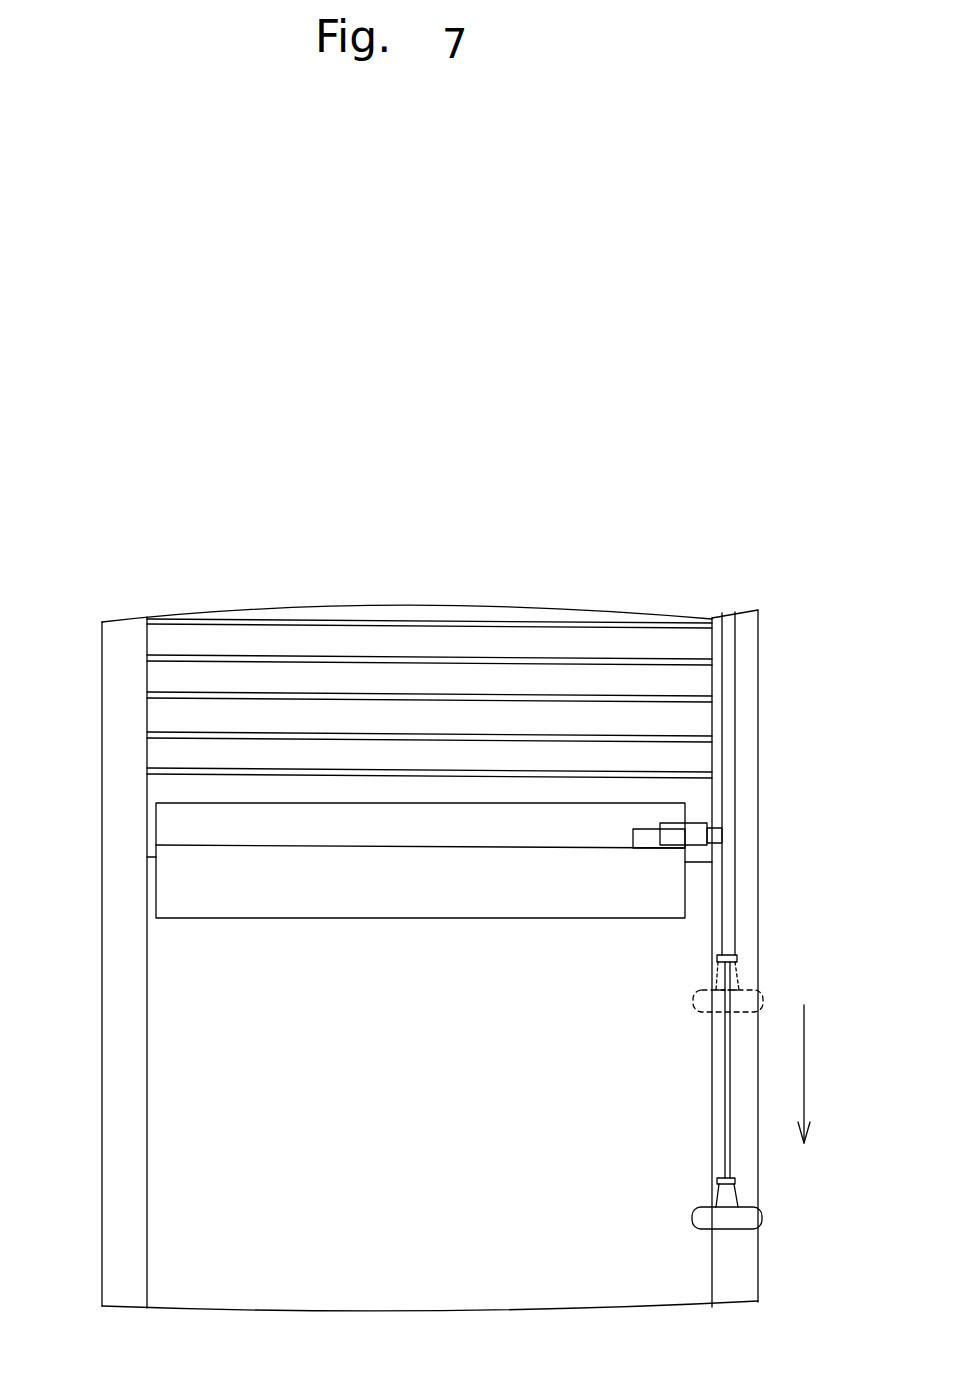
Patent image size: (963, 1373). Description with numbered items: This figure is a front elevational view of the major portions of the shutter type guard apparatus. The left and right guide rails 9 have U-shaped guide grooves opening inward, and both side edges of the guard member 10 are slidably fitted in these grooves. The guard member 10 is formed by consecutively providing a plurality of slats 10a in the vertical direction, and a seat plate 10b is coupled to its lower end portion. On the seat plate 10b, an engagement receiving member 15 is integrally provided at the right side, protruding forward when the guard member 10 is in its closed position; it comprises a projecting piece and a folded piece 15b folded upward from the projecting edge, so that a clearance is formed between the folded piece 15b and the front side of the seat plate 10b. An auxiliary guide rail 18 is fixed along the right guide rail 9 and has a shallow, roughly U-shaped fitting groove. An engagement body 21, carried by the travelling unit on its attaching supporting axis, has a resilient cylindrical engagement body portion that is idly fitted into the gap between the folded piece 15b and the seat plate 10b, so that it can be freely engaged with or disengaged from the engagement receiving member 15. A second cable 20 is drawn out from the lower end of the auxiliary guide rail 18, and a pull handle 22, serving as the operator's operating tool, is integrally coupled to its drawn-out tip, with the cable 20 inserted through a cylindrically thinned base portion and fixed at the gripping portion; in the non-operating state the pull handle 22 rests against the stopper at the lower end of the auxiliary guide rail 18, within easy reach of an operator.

The guide rail 9 is at (748, 660).
The guard member 10 is at (429, 633).
The slat 10a is at (364, 637).
The seat plate 10b is at (366, 822).
The engagement receiving member 15 is at (660, 840).
The folded piece 15b is at (635, 838).
The auxiliary guide rail 18 is at (724, 880).
The second cable 20 is at (728, 1135).
The engagement body 21 is at (697, 828).
The pull handle 22 is at (748, 1003).